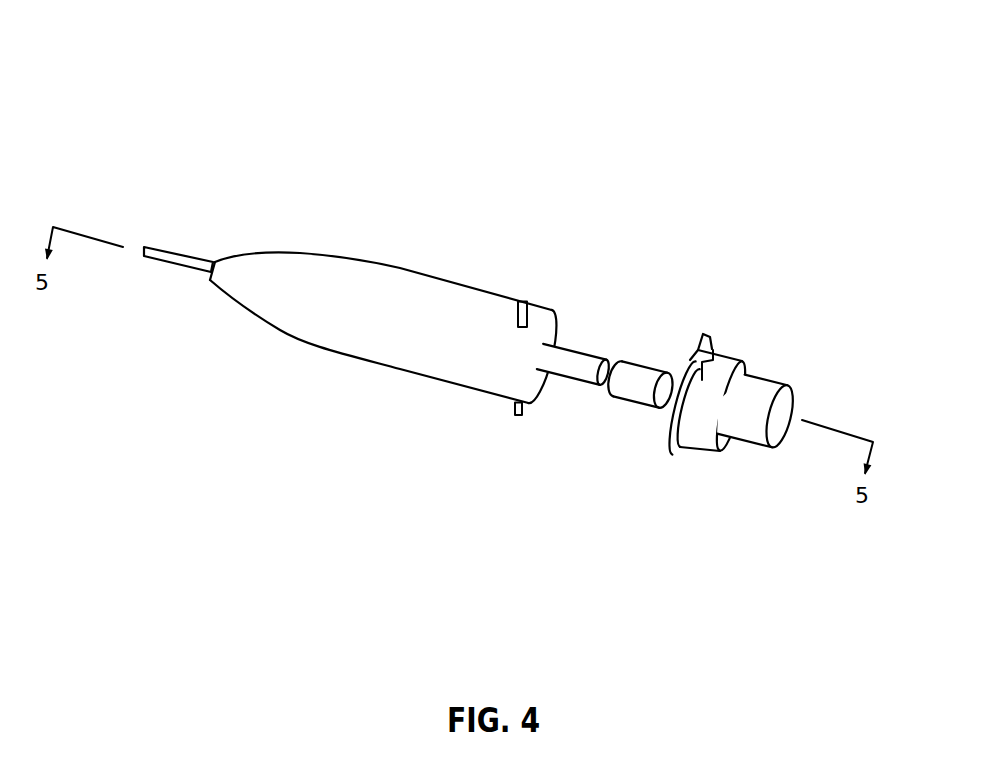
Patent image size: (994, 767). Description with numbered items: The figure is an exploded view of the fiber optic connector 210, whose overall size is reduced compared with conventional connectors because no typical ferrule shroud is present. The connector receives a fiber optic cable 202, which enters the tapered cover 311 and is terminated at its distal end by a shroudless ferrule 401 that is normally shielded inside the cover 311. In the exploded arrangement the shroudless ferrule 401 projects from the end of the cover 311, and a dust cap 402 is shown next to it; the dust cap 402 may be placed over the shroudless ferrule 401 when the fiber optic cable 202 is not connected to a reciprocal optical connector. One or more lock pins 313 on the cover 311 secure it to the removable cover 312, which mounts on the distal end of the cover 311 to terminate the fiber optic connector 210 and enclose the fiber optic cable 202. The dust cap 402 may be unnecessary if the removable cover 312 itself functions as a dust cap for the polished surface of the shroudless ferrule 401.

The fiber optic connector 210 is at (501, 53).
The fiber optic cable 202 is at (173, 252).
The cover 311 is at (418, 303).
The lock pins 313 is at (527, 304).
The shroudless ferrule 401 is at (588, 353).
The dust cap 402 is at (642, 380).
The removable cover 312 is at (757, 403).